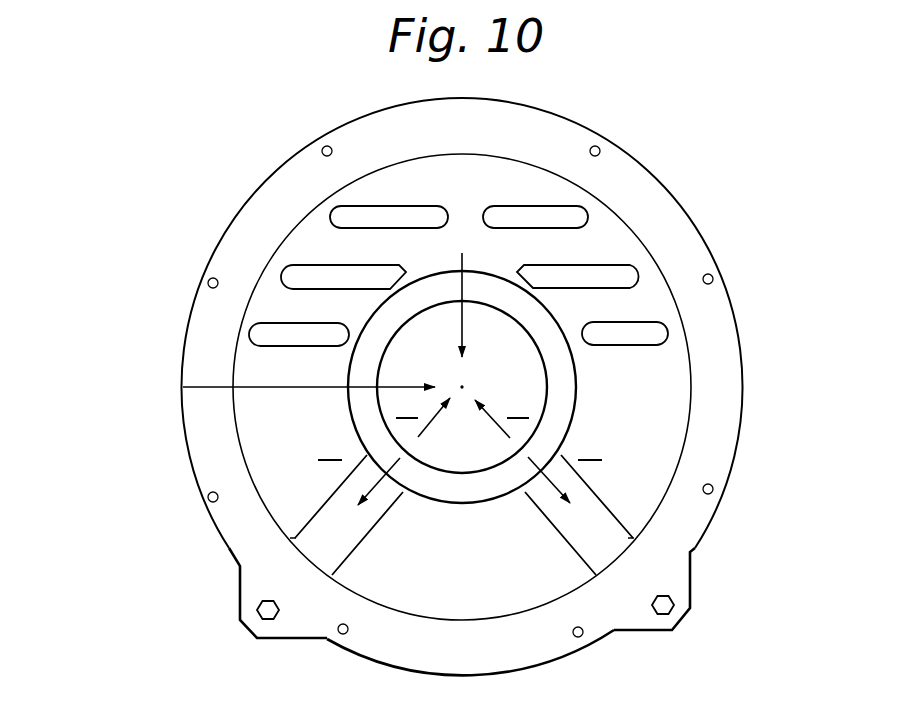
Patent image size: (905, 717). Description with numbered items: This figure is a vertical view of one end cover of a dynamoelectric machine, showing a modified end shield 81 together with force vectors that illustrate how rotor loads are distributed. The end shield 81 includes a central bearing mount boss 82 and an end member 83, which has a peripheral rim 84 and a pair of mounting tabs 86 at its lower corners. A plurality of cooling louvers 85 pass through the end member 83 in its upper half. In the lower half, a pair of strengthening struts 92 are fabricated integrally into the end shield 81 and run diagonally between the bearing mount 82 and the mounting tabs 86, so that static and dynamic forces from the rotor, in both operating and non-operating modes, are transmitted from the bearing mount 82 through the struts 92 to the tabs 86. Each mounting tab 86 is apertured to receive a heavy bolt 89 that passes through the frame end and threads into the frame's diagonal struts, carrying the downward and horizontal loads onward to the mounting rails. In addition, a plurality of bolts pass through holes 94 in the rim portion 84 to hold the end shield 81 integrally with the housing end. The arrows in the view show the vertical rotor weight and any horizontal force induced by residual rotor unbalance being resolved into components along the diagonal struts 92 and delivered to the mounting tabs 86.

The end shield 81 is at (756, 368).
The bearing mount boss 82 is at (468, 508).
The end member 83 is at (293, 425).
The peripheral rim 84 is at (717, 440).
The slots 85 is at (290, 277).
The mounting tabs 86 is at (294, 640).
The bolts 89 is at (257, 610).
The strengthening struts 92 is at (566, 550).
The holes 94 is at (325, 146).